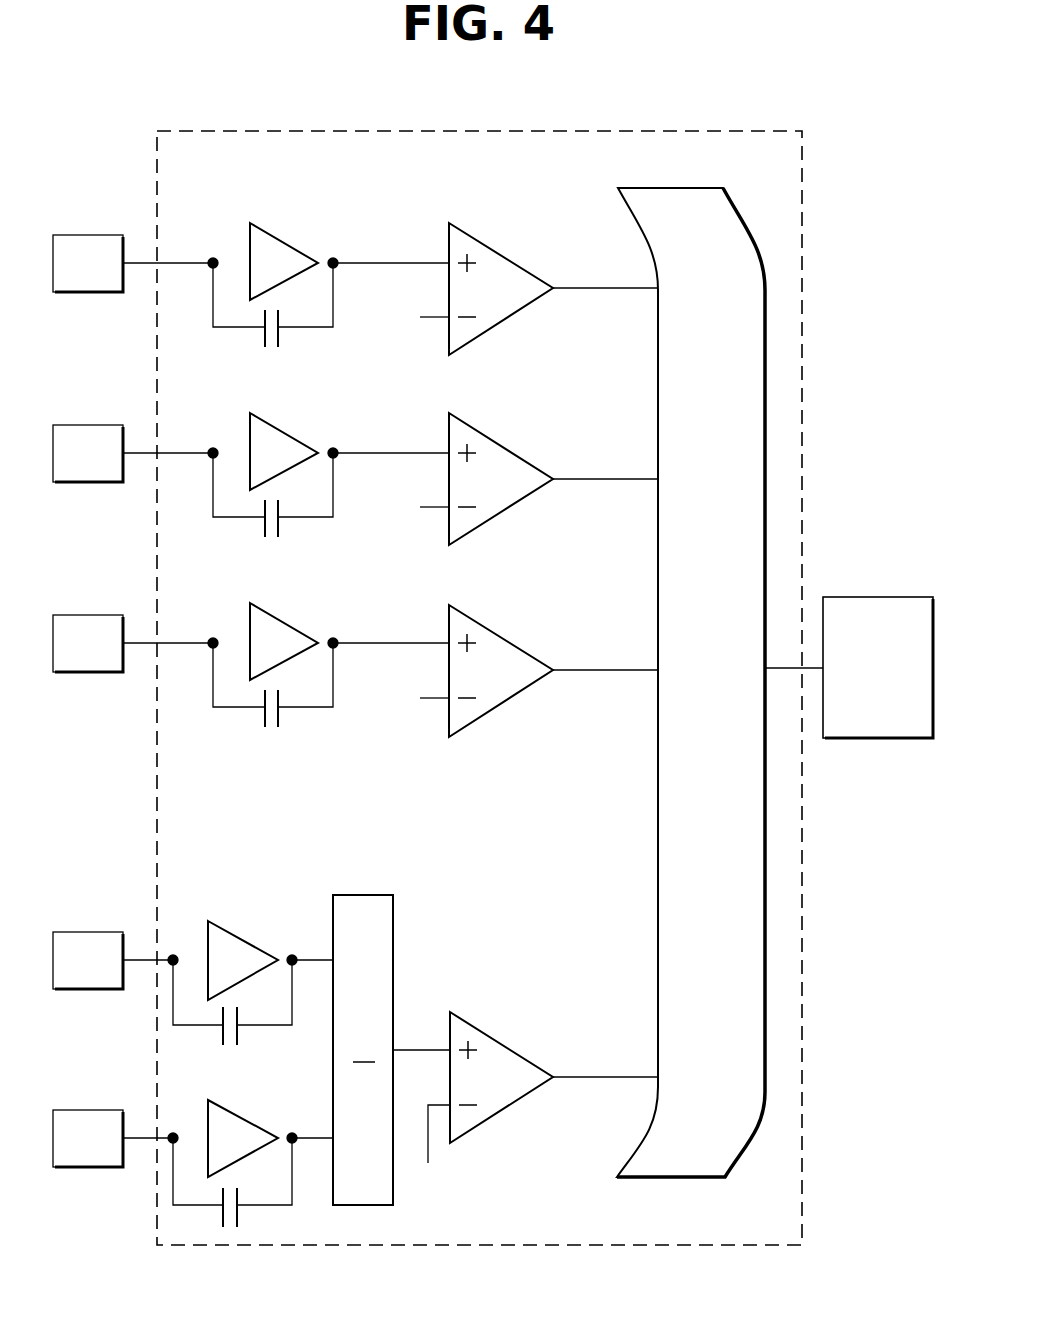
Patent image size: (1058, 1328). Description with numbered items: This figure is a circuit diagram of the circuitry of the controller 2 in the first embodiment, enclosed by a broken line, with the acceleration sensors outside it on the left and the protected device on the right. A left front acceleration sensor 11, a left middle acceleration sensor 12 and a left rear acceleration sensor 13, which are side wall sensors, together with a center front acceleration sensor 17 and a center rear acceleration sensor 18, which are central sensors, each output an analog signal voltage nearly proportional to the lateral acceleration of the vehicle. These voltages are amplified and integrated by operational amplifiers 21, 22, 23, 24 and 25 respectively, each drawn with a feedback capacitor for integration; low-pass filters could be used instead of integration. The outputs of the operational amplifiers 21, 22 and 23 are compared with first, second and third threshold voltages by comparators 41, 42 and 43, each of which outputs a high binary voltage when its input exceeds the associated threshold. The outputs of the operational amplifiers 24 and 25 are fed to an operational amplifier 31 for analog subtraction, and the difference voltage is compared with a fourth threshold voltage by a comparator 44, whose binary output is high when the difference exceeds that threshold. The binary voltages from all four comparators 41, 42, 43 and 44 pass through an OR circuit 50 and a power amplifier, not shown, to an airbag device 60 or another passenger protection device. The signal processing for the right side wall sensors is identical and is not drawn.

The controller 2 is at (665, 131).
The left front acceleration sensor 11 is at (93, 236).
The left middle acceleration sensor 12 is at (93, 426).
The left rear acceleration sensor 13 is at (93, 616).
The center front acceleration sensor 17 is at (93, 933).
The center rear acceleration sensor 18 is at (93, 1111).
The operational amplifier 21 is at (287, 247).
The operational amplifier 22 is at (287, 437).
The operational amplifier 23 is at (287, 627).
The operational amplifier 24 is at (246, 947).
The operational amplifier 25 is at (246, 1125).
The operational amplifier for analog subtraction 31 is at (393, 927).
The comparator 41 is at (502, 260).
The comparator 42 is at (502, 450).
The comparator 43 is at (502, 642).
The comparator 44 is at (502, 1052).
The OR circuit 50 is at (752, 370).
The airbag device 60 is at (873, 607).